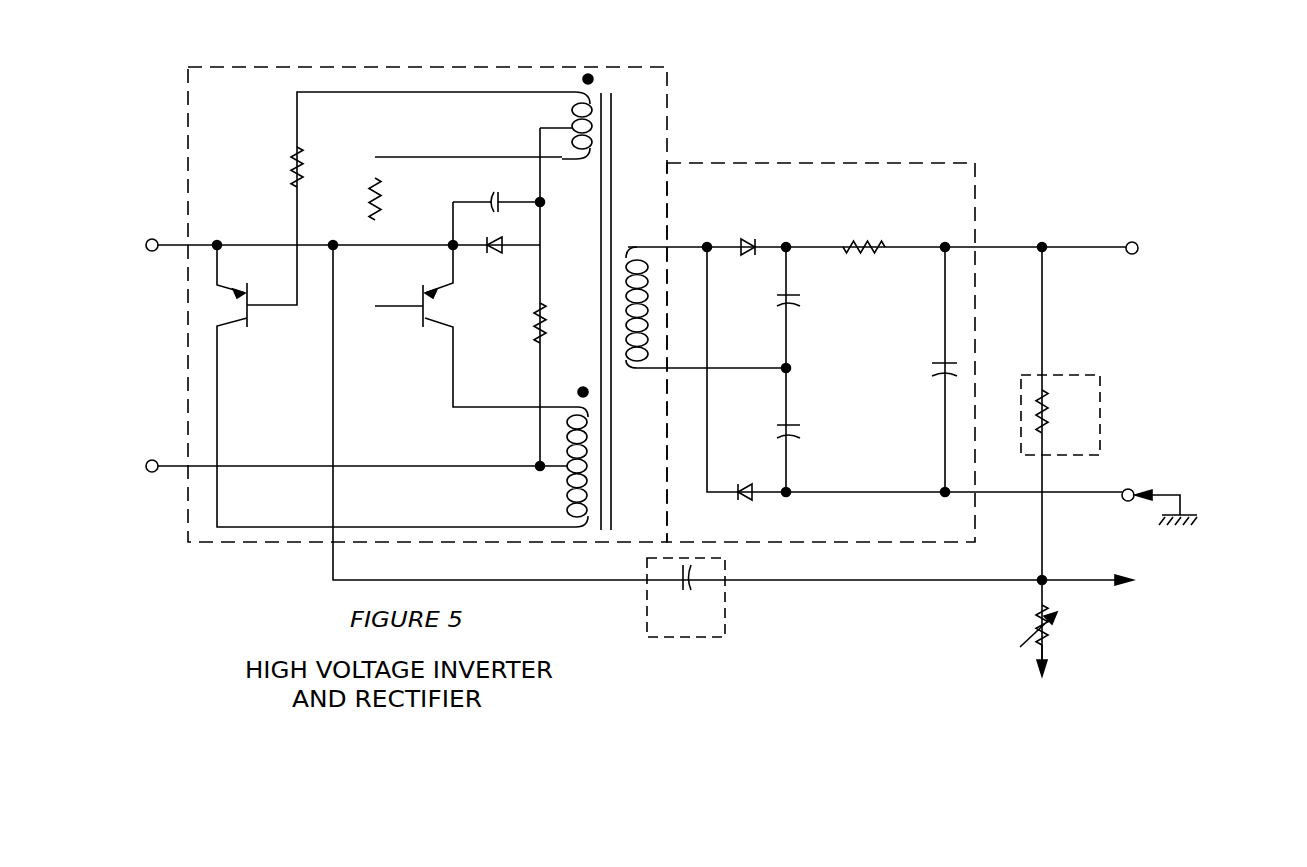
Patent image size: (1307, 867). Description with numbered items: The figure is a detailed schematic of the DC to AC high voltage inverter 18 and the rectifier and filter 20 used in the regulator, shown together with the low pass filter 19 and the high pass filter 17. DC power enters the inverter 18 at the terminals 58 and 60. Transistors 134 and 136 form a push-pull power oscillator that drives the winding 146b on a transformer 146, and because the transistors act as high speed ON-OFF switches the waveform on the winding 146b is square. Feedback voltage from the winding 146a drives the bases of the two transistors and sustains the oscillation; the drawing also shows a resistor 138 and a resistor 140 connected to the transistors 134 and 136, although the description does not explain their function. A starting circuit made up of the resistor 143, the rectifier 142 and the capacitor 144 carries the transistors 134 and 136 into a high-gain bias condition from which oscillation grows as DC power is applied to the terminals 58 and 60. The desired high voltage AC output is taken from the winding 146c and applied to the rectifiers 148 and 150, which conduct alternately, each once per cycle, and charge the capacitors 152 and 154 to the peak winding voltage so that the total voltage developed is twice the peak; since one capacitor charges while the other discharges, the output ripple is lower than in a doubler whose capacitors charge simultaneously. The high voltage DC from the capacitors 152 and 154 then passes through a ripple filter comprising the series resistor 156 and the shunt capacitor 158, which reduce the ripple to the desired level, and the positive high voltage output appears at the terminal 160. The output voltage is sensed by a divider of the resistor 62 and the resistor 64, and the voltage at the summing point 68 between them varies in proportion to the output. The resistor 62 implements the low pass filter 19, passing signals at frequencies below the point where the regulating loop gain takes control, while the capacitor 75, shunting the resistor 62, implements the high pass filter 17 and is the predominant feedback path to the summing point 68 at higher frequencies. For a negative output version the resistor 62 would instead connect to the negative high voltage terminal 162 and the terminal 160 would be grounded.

The high pass filter 17 is at (725, 637).
The DC to AC high voltage inverter 18 is at (188, 540).
The low pass filter 19 is at (1100, 375).
The rectifier and filter 20 is at (977, 163).
The terminal 58 is at (136, 245).
The terminal 60 is at (136, 466).
The resistor 62 is at (1046, 415).
The resistor 64 is at (1048, 639).
The summing point 68 is at (1044, 577).
The capacitor 75 is at (688, 586).
The transistor 134 is at (250, 297).
The transistor 136 is at (420, 313).
The resistor 138 is at (305, 167).
The resistor 140 is at (381, 205).
The rectifier 142 is at (490, 256).
The resistor 143 is at (548, 320).
The capacitor 144 is at (504, 196).
The transformer 146 is at (613, 152).
The winding 146a is at (564, 162).
The winding 146b is at (562, 407).
The winding 146c is at (645, 372).
The rectifier 148 is at (749, 242).
The rectifier 150 is at (745, 497).
The capacitor 152 is at (796, 297).
The capacitor 154 is at (795, 424).
The series resistor 156 is at (868, 241).
The shunt capacitor 158 is at (940, 365).
The terminal 160 is at (1210, 249).
The negative high voltage terminal 162 is at (1157, 498).